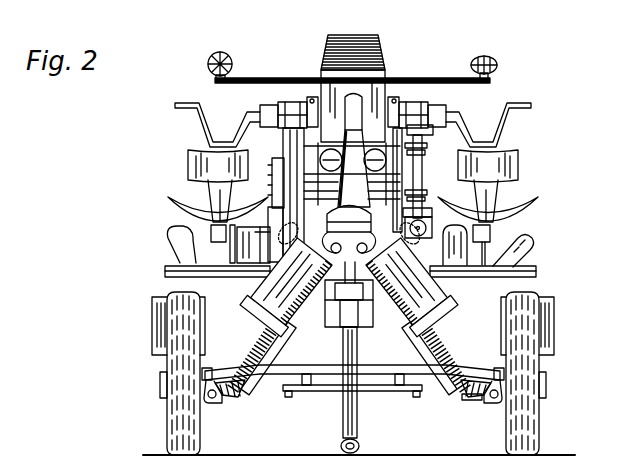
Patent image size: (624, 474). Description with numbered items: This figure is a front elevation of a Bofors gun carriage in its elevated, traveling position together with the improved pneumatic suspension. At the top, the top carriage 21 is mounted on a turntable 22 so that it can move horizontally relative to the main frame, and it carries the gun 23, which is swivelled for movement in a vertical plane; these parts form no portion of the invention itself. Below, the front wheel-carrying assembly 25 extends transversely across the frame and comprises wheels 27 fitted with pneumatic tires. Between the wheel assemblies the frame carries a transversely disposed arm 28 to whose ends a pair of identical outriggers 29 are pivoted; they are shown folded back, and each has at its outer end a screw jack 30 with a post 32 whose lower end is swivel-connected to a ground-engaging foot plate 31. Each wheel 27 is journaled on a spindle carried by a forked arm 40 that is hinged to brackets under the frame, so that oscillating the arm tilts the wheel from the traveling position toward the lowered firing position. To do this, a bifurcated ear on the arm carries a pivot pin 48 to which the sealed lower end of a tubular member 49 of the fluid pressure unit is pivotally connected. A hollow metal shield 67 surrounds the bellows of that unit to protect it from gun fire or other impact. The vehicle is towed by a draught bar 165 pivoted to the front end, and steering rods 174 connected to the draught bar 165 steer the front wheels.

The top carriage 21 is at (504, 198).
The turntable 22 is at (445, 279).
The gun 23 is at (380, 78).
The wheel-carrying assembly 25 is at (225, 367).
The wheel 27 is at (163, 392).
The transversely disposed arm 28 is at (549, 300).
The outrigger 29 is at (203, 325).
The screw jack 30 is at (312, 344).
The foot plate 31 is at (294, 396).
The post 32 is at (300, 384).
The forked arm 40 is at (250, 387).
The pivot pin 48 is at (219, 397).
The tubular member 49 is at (262, 333).
The shield 67 is at (247, 304).
The draught bar 165 is at (343, 428).
The steering rod 174 is at (476, 398).